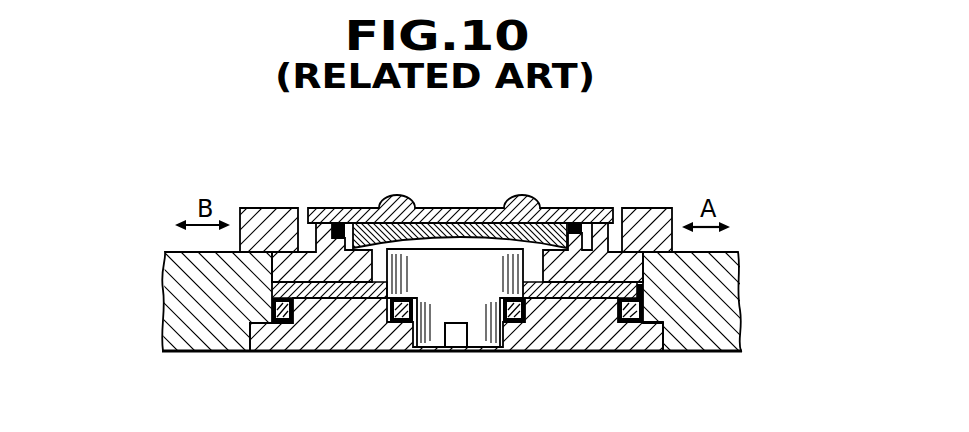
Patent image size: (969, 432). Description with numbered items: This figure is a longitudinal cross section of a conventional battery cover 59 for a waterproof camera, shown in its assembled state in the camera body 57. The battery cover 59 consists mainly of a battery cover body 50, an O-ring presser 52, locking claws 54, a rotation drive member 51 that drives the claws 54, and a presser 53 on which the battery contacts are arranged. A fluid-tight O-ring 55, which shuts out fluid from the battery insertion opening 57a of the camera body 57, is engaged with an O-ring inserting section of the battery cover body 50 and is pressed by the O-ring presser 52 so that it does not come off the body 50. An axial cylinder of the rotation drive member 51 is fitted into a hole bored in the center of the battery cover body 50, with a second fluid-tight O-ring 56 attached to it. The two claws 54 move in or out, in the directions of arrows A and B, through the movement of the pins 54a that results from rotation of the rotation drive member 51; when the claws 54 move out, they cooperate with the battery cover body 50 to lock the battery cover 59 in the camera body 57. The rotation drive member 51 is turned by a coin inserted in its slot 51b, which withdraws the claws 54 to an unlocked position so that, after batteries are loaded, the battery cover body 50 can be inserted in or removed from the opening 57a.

The battery cover body 50 is at (652, 338).
The rotation drive member 51 is at (478, 300).
The slot 51b is at (453, 348).
The O-ring presser 52 is at (326, 300).
The presser 53 is at (487, 210).
The locking claws 54 is at (257, 217).
The pins 54a is at (344, 222).
The fluid-tight O-ring 55 is at (637, 325).
The fluid-tight O-ring 56 is at (516, 305).
The camera body 57 is at (728, 262).
The battery insertion opening 57a is at (690, 340).
The battery cover 59 is at (432, 202).